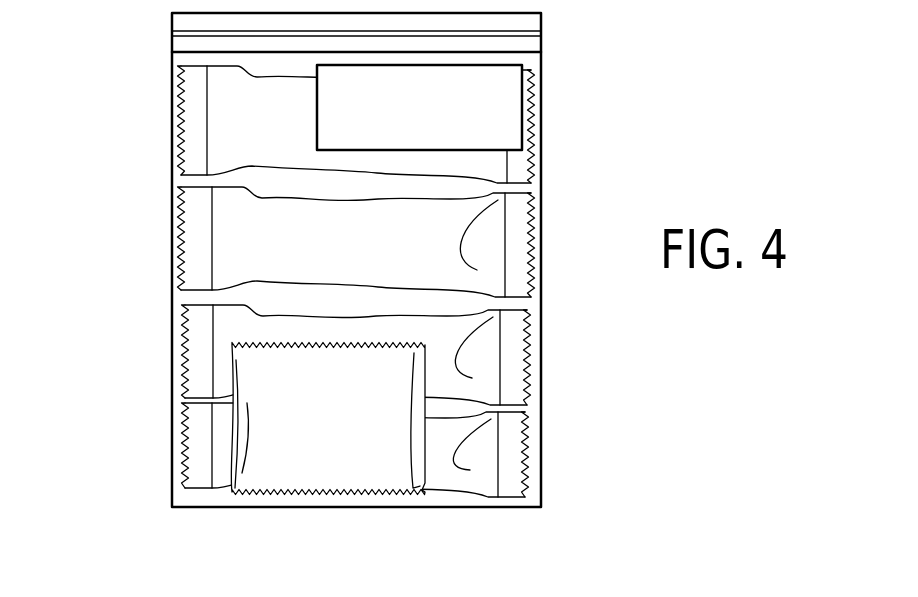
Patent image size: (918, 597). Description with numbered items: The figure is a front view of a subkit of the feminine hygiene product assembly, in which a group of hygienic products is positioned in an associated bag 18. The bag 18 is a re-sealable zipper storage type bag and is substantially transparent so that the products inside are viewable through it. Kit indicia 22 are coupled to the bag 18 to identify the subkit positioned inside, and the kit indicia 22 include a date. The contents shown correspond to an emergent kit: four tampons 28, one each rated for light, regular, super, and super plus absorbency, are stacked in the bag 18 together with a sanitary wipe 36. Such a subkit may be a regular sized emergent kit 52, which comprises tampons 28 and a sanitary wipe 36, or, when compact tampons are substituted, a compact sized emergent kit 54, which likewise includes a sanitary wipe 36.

The bag 18 is at (556, 225).
The kit indicia 22 is at (462, 93).
The tampons 28 is at (232, 156).
The sanitary wipes 36 is at (288, 452).
The regular sized emergent kit 52 is at (647, 121).
The compact sized emergent kit 54 is at (675, 159).